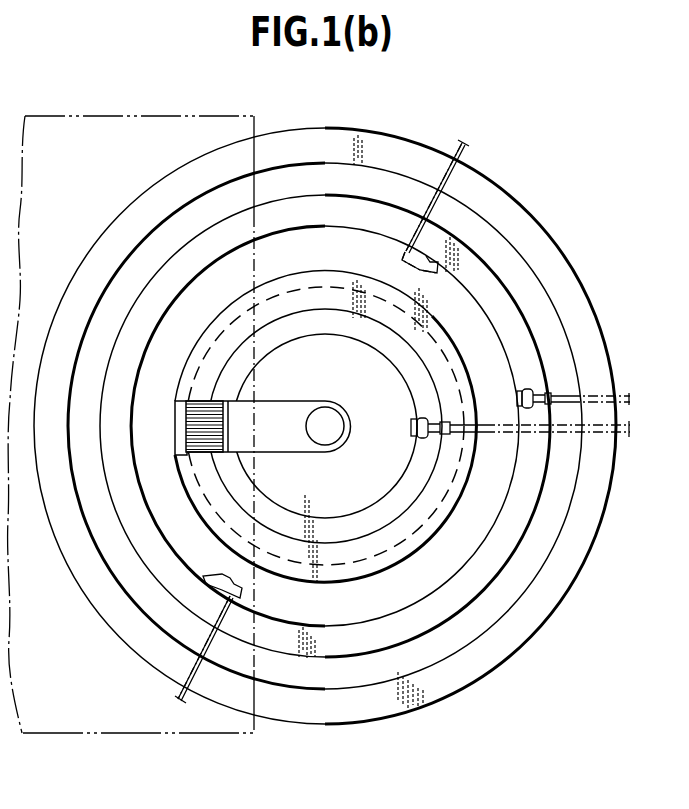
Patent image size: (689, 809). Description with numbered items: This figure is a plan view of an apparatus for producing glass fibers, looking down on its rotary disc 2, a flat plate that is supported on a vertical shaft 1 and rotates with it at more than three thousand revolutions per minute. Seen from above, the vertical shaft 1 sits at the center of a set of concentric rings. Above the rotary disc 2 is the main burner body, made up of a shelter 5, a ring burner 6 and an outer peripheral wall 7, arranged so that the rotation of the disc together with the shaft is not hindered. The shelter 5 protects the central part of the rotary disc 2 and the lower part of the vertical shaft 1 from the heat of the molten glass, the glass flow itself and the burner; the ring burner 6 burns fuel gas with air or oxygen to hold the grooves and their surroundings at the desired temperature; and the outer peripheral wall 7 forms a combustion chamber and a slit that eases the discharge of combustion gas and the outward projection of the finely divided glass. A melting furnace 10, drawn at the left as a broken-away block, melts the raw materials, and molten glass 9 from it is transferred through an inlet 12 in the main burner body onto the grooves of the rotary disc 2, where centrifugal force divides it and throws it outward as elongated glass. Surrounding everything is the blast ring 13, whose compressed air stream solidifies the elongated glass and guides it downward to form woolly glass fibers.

The vertical shaft 1 is at (342, 422).
The rotary disc 2 is at (220, 525).
The shelter 5 is at (363, 488).
The ring burner 6 is at (412, 482).
The outer peripheral wall 7 is at (465, 470).
The molten glass 9 is at (202, 423).
The melting furnace 10 is at (132, 735).
The inlet 12 is at (177, 401).
The blast ring 13 is at (497, 292).